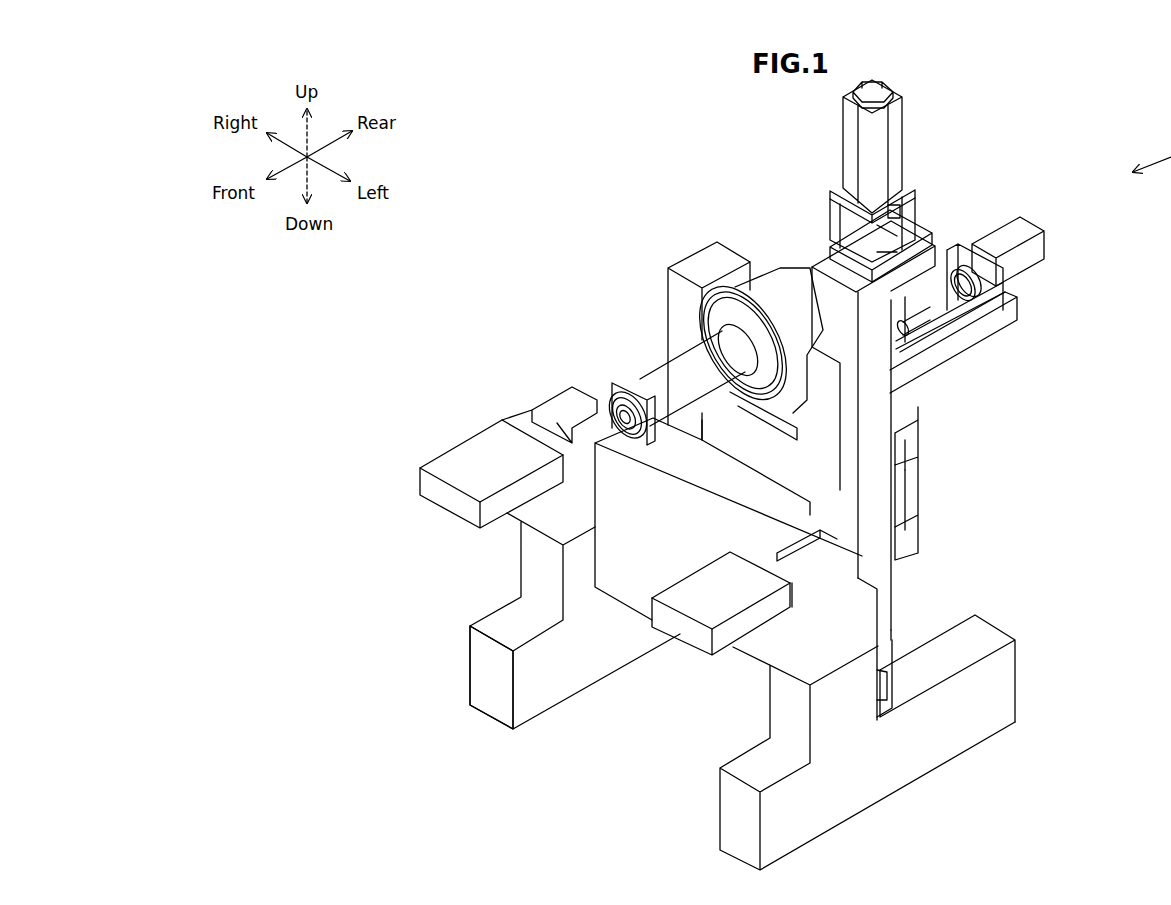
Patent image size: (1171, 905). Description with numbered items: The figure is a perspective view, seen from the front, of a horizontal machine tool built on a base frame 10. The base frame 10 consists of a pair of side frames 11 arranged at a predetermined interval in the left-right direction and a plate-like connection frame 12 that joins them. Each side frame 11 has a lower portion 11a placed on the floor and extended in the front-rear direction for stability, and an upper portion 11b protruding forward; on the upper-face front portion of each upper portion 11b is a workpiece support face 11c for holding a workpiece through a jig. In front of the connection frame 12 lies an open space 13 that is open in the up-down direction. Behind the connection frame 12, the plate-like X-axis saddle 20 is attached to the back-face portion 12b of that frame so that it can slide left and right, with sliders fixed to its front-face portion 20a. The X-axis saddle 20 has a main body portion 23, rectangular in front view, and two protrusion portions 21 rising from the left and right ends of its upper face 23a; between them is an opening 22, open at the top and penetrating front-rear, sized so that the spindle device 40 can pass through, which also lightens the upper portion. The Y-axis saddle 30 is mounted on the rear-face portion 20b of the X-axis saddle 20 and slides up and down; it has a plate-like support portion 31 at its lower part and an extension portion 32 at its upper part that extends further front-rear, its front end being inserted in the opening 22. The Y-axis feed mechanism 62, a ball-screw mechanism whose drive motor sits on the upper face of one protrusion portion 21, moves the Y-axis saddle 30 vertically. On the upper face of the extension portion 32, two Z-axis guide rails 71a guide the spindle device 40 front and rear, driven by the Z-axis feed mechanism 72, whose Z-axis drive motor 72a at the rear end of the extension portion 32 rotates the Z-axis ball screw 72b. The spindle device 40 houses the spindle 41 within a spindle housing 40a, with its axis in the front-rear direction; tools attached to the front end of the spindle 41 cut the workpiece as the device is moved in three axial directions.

The base frame 10 is at (705, 628).
The side frame 11 is at (705, 628).
The lower portion 11a is at (536, 700).
The upper portion 11b is at (452, 500).
The workpiece support face 11c is at (470, 455).
The connection frame 12 is at (805, 570).
The back-face portion 12b is at (893, 647).
The open space 13 is at (632, 753).
The X-axis saddle 20 is at (795, 462).
The front-face portion 20a is at (823, 457).
The rear-face portion 20b is at (905, 582).
The protrusion portion 21 is at (698, 262).
The opening 22 is at (892, 490).
The main body portion 23 is at (755, 480).
The upper face 23a is at (718, 438).
The Y-axis saddle 30 is at (988, 426).
The support portion 31 is at (912, 508).
The extension portion 32 is at (1010, 303).
The spindle device 40 is at (720, 320).
The spindle housing 40a is at (662, 373).
The spindle 41 is at (610, 390).
The Y-axis feed mechanism 62 is at (897, 143).
The Z-axis guide rail 71a is at (980, 313).
The Z-axis feed mechanism 72 is at (980, 288).
The Z-axis drive motor 72a is at (1018, 238).
The Z-axis ball screw 72b is at (908, 327).